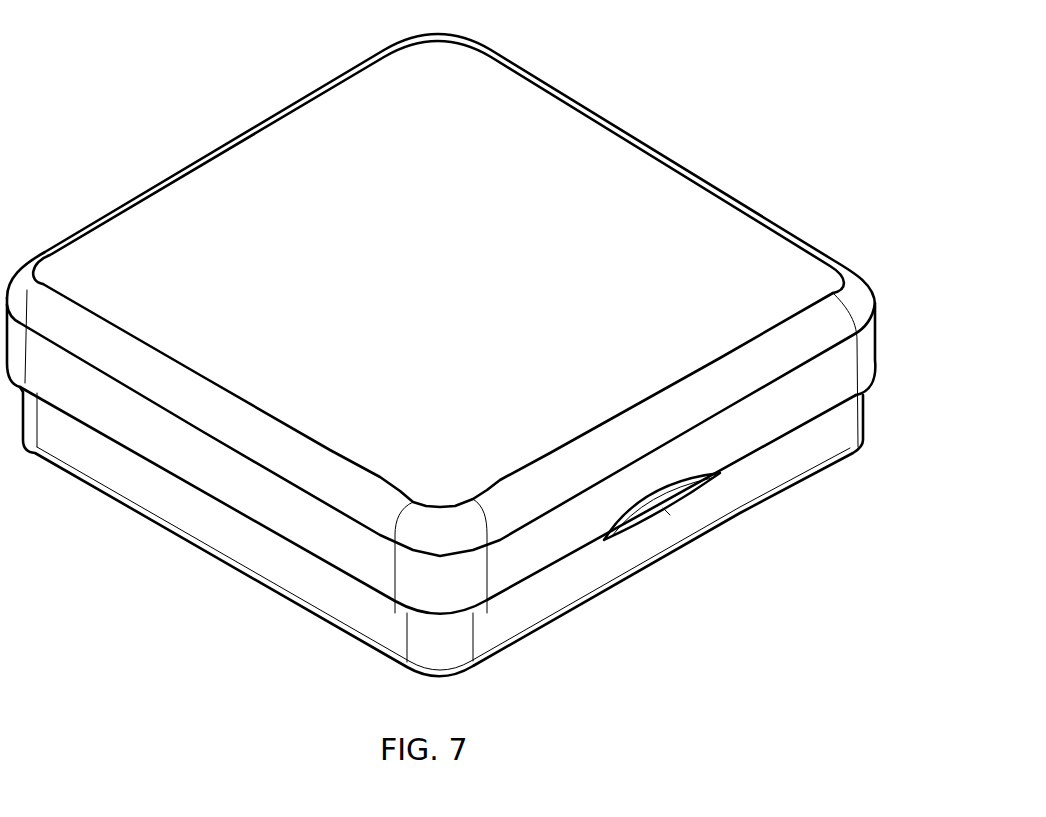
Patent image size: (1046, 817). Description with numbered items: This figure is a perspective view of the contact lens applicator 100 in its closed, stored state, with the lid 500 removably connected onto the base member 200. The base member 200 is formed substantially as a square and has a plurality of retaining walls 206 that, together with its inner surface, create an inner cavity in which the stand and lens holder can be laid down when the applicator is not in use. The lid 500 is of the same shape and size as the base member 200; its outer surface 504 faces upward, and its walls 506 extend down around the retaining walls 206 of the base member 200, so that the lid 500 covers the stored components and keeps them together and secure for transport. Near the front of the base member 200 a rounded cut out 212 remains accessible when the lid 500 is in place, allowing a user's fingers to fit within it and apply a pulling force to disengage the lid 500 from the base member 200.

The contact lens applicator 100 is at (80, 67).
The lid 500 is at (681, 138).
The outer surface 504 is at (218, 197).
The walls 506 is at (115, 408).
The base member 200 is at (249, 600).
The retaining walls 206 is at (337, 597).
The cut outs 212 is at (680, 513).